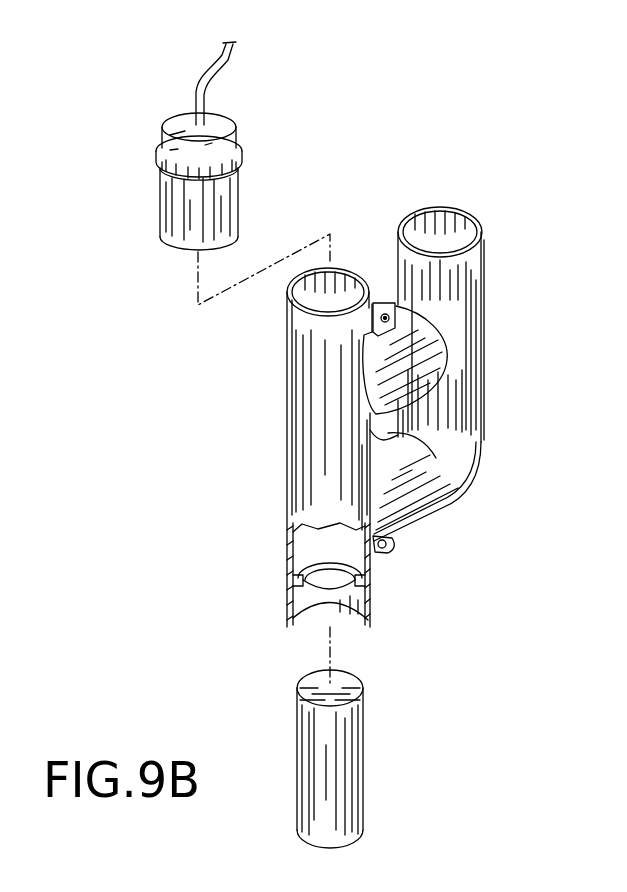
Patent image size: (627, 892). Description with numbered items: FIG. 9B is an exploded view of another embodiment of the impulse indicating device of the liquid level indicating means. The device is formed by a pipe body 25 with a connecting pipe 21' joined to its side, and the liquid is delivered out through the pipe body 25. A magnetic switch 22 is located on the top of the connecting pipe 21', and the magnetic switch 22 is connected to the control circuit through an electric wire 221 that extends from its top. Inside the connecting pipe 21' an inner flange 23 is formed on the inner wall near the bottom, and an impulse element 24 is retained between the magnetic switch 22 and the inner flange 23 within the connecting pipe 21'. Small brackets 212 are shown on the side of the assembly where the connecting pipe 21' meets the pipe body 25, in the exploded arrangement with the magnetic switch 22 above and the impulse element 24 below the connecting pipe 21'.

The magnetic switch 22 is at (174, 126).
The electric wire 221 is at (228, 72).
The connecting pipe 21' is at (268, 447).
The mounting bracket 212 is at (380, 302).
The pipe body 25 is at (481, 368).
The inner flange 23 is at (318, 610).
The impulse element 24 is at (380, 758).